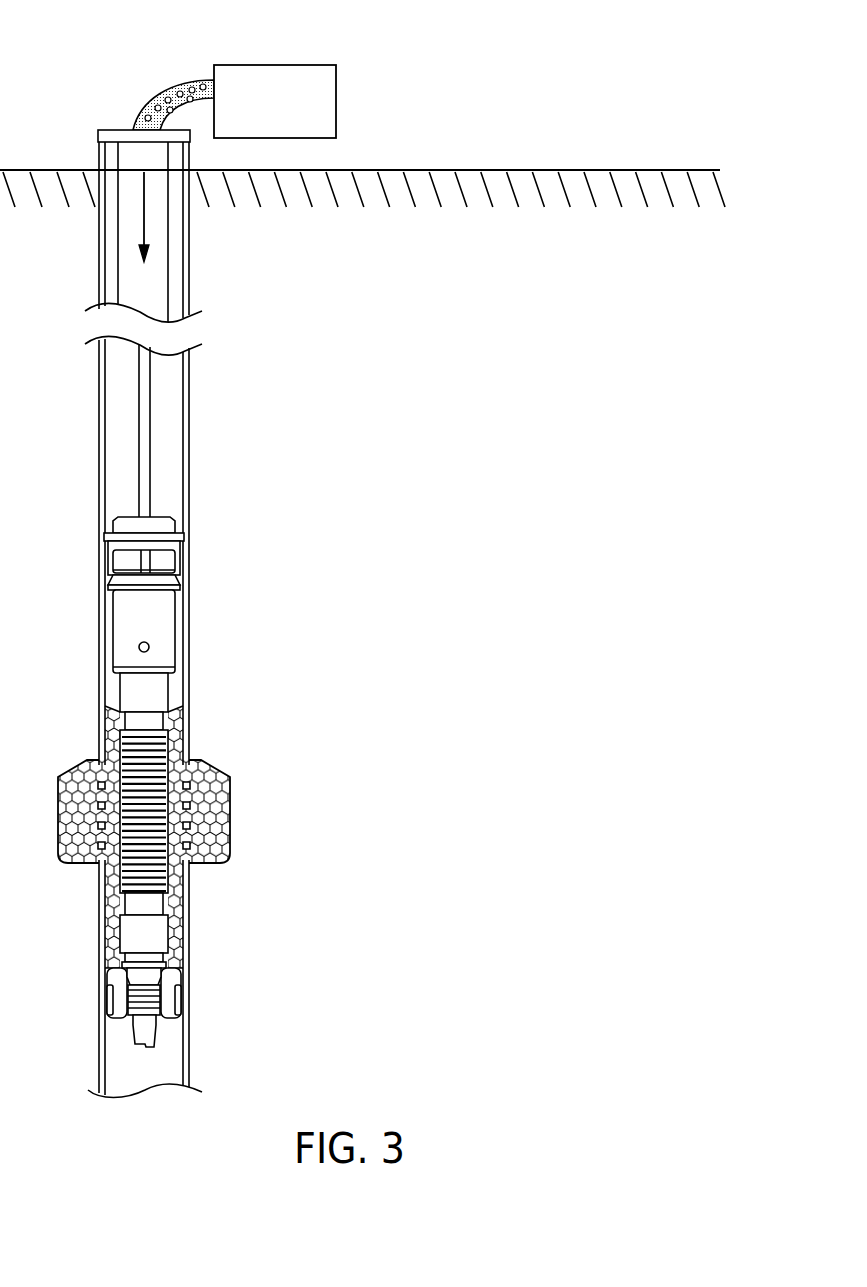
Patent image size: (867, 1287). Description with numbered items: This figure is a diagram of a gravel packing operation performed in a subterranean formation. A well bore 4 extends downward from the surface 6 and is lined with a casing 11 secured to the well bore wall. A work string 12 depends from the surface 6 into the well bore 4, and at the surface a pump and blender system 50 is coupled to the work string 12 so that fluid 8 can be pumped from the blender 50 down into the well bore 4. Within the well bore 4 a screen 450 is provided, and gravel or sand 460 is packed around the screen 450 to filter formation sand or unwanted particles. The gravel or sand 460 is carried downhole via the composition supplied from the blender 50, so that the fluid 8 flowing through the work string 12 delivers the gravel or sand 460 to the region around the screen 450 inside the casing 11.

The well bore 4 is at (112, 260).
The surface 6 is at (518, 170).
The fracturing fluid 8 is at (163, 97).
The casing 11 is at (98, 283).
The work string 12 is at (143, 407).
The pump and blender system 50 is at (273, 64).
The screen 450 is at (168, 880).
The gravel or sand 460 is at (210, 777).